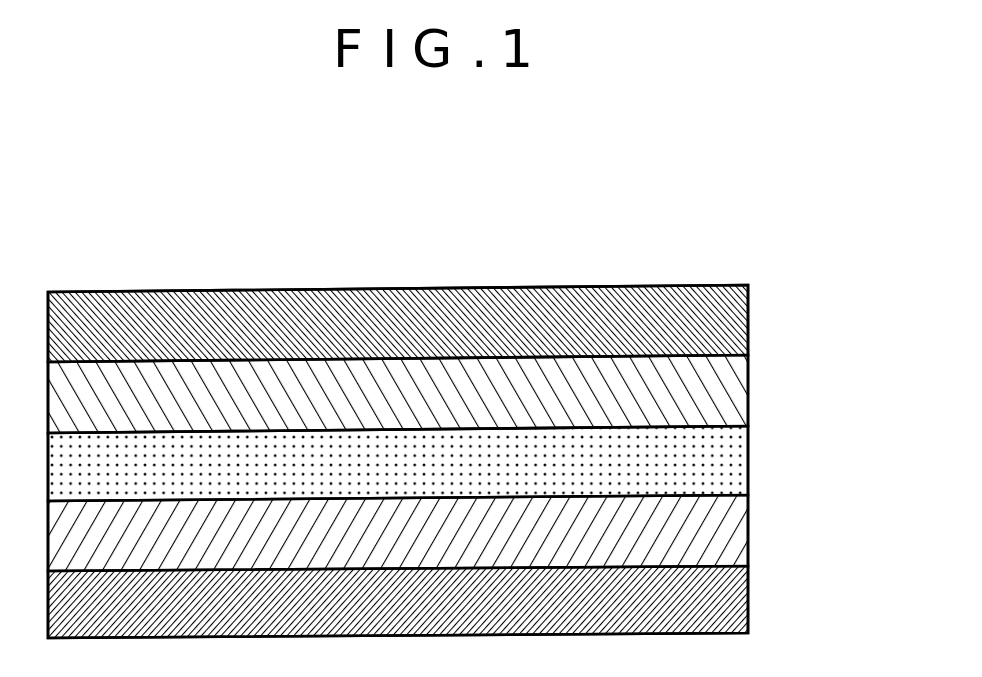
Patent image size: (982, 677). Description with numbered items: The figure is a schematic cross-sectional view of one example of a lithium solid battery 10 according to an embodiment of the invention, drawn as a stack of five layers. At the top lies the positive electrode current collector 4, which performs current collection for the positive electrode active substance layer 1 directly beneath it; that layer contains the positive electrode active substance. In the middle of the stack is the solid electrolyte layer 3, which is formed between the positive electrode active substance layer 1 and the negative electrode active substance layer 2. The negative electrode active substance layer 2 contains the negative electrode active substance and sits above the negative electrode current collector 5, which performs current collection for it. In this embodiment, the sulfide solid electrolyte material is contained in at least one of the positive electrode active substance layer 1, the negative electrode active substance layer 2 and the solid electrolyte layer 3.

The lithium solid battery 10 is at (694, 226).
The positive electrode current collector 4 is at (732, 302).
The positive electrode active substance layer 1 is at (725, 377).
The solid electrolyte layer 3 is at (728, 447).
The negative electrode active substance layer 2 is at (728, 515).
The negative electrode current collector 5 is at (732, 582).